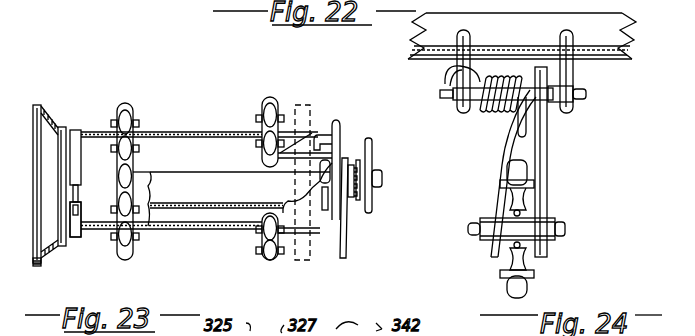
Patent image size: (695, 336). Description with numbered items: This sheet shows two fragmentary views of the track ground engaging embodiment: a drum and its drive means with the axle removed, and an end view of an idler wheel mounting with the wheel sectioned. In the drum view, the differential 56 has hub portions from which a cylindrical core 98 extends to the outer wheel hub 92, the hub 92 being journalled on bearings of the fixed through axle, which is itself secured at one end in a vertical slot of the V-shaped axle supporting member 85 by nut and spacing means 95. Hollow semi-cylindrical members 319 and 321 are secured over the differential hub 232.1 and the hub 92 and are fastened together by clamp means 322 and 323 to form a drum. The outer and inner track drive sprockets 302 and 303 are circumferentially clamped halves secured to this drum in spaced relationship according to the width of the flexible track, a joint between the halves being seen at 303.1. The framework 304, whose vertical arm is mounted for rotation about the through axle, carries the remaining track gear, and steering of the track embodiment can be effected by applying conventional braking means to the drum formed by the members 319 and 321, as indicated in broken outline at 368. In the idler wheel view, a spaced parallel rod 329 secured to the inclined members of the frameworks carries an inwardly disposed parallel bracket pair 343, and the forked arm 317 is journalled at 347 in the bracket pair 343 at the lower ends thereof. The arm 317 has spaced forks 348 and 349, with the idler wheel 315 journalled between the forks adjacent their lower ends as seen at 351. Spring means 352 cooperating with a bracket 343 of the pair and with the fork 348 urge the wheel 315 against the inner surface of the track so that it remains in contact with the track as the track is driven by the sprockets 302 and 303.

In FIG. 23, the differential 56 is at (55, 105).
In FIG. 23, the differential hub 232.1 is at (75, 126).
In FIG. 23, the hollow semi-cylindrical member 319 is at (197, 135).
In FIG. 23, the joint 303.1 is at (135, 171).
In FIG. 23, the braking means 368 is at (299, 107).
In FIG. 23, the outer wheel hub 92 is at (351, 103).
In FIG. 23, the V-shaped axle supporting member 85 is at (371, 147).
In FIG. 23, the nut and spacing means 95 is at (383, 190).
In FIG. 23, the cylindrical core 98 is at (192, 190).
In FIG. 23, the hollow semi-cylindrical member 321 is at (205, 228).
In FIG. 23, the clamp means 323 is at (80, 238).
In FIG. 23, the inner track drive sprocket 303 is at (123, 256).
In FIG. 23, the outer track drive sprocket 302 is at (268, 251).
In FIG. 23, the clamp means 322 is at (322, 250).
In FIG. 23, the framework 304 is at (347, 226).
In FIG. 24, the rod 329 is at (530, 45).
In FIG. 24, the bracket pair 343 is at (573, 67).
In FIG. 24, the spring means 352 is at (446, 74).
In FIG. 24, the journal 347 is at (446, 100).
In FIG. 24, the fork 348 is at (496, 160).
In FIG. 24, the forked arm 317 is at (533, 162).
In FIG. 24, the fork 349 is at (547, 191).
In FIG. 24, the journal 351 is at (553, 238).
In FIG. 24, the idler wheel 315 is at (509, 282).